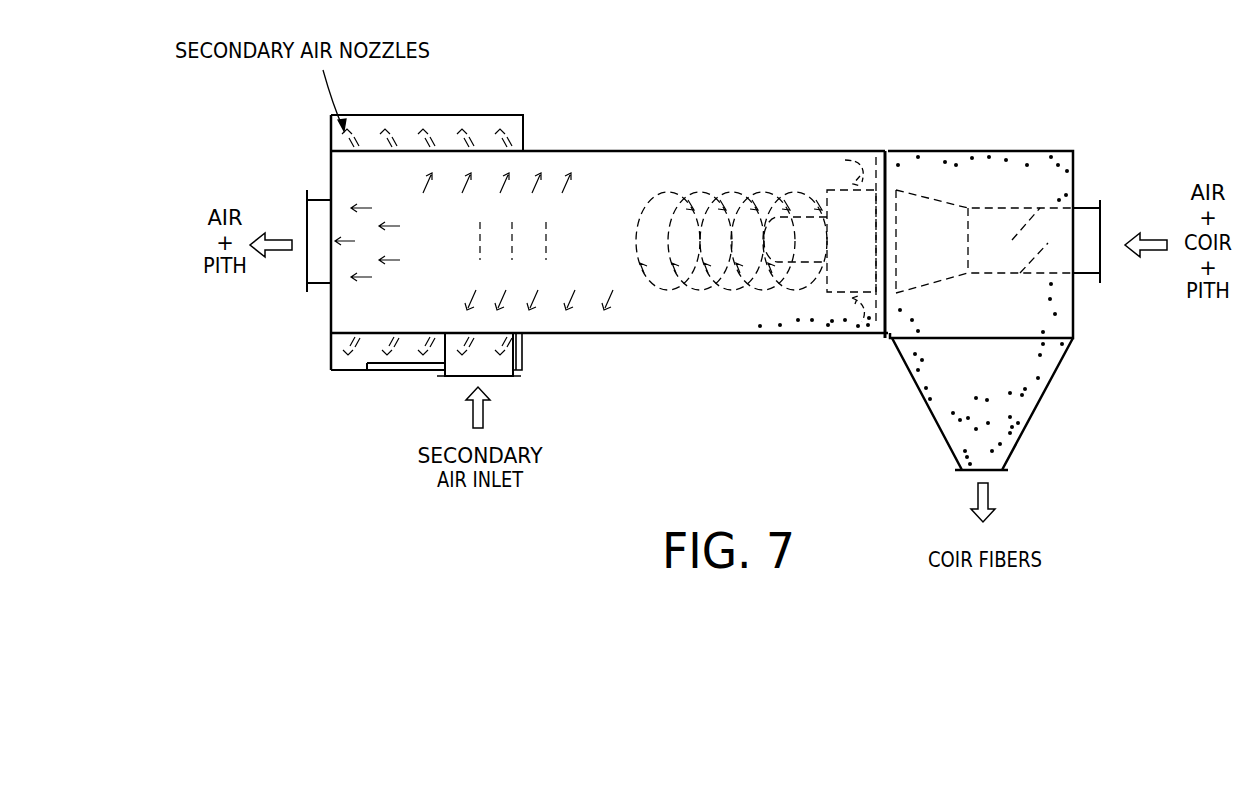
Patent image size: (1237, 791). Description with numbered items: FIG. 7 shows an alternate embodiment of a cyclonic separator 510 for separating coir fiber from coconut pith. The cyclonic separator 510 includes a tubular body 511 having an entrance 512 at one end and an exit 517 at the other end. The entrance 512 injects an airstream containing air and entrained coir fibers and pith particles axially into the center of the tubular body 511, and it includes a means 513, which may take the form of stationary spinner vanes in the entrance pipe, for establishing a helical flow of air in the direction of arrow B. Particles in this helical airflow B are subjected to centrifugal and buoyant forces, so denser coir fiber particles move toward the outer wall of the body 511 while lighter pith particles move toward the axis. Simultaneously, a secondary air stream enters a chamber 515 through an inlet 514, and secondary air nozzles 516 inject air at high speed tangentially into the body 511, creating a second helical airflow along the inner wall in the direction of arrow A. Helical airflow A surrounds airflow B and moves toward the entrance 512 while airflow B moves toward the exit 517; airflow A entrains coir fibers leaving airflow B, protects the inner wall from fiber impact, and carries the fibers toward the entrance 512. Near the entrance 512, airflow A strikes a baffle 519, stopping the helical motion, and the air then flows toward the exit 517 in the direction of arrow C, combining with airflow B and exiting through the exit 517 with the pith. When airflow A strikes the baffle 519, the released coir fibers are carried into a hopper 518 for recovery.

The cyclonic separator 510 is at (716, 386).
The tubular body 511 is at (768, 152).
The entrance 512 is at (995, 208).
The means for establishing a helical flow 513 is at (1040, 250).
The inlet 514 is at (522, 361).
The chamber 515 is at (350, 370).
The secondary air nozzles 516 is at (373, 362).
The exit 517 is at (318, 285).
The hopper 518 is at (1033, 418).
The baffle 519 is at (876, 175).
The helical airflow A is at (602, 188).
The helical airflow B is at (668, 192).
The airflow direction C is at (854, 333).